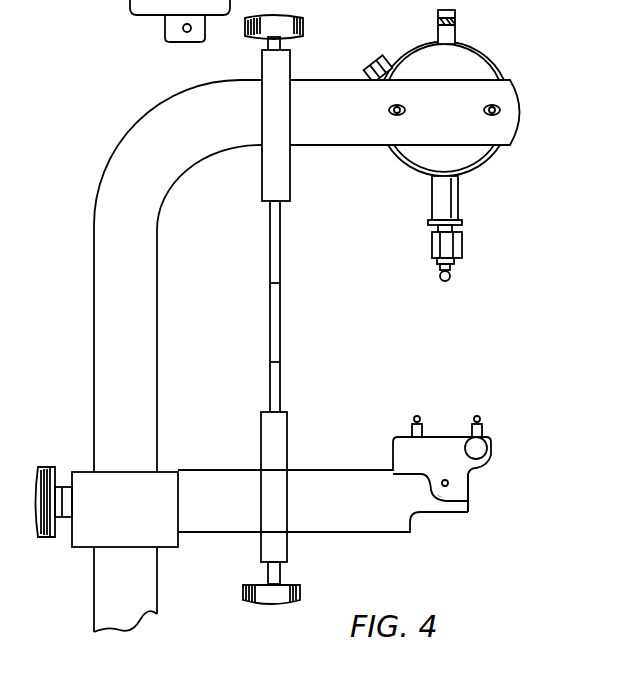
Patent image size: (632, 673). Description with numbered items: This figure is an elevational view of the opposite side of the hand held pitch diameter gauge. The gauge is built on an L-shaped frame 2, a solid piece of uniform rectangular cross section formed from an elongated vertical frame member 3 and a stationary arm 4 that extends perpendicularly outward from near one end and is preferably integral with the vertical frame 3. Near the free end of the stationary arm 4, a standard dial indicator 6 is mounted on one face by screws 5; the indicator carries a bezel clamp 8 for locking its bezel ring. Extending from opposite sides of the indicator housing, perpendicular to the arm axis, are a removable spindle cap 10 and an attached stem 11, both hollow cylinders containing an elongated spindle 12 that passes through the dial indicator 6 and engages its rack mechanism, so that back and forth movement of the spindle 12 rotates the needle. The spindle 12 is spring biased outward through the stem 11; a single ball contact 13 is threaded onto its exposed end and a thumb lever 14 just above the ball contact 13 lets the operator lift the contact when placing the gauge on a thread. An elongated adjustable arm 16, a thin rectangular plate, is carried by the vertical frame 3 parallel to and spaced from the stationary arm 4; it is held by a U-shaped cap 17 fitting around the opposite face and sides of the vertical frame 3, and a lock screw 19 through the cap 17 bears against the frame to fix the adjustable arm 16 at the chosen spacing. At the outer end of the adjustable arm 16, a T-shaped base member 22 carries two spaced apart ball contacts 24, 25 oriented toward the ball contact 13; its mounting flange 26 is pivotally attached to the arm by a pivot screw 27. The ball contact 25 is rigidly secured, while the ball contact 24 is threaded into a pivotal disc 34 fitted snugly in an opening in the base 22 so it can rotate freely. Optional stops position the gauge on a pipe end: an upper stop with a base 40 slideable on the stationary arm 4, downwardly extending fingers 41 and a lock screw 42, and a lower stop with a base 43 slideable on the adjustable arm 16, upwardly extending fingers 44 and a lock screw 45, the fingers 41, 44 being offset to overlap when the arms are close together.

The L-shaped frame 2 is at (150, 112).
The vertical frame member 3 is at (158, 275).
The stationary arm 4 is at (326, 80).
The screws 5 is at (405, 112).
The dial indicator 6 is at (470, 45).
The bezel clamp 8 is at (382, 56).
The spindle cap 10 is at (440, 20).
The stem 11 is at (460, 188).
The spindle 12 is at (455, 231).
The ball contact 13 is at (450, 281).
The thumb lever 14 is at (464, 245).
The adjustable arm 16 is at (232, 470).
The U-shaped cap 17 is at (86, 475).
The lock screw 19 is at (44, 538).
The base member 22 is at (393, 451).
The ball contact 24 is at (479, 417).
The ball contact 25 is at (414, 417).
The mounting flange 26 is at (469, 486).
The pivot screw 27 is at (449, 483).
The pivotal disc 34 is at (487, 446).
The base of upper stop 40 is at (290, 161).
The fingers of upper stop 41 is at (281, 222).
The lock screw 42 is at (303, 28).
The base of lower stop 43 is at (288, 423).
The fingers of lower stop 44 is at (281, 369).
The lock screw 45 is at (300, 593).